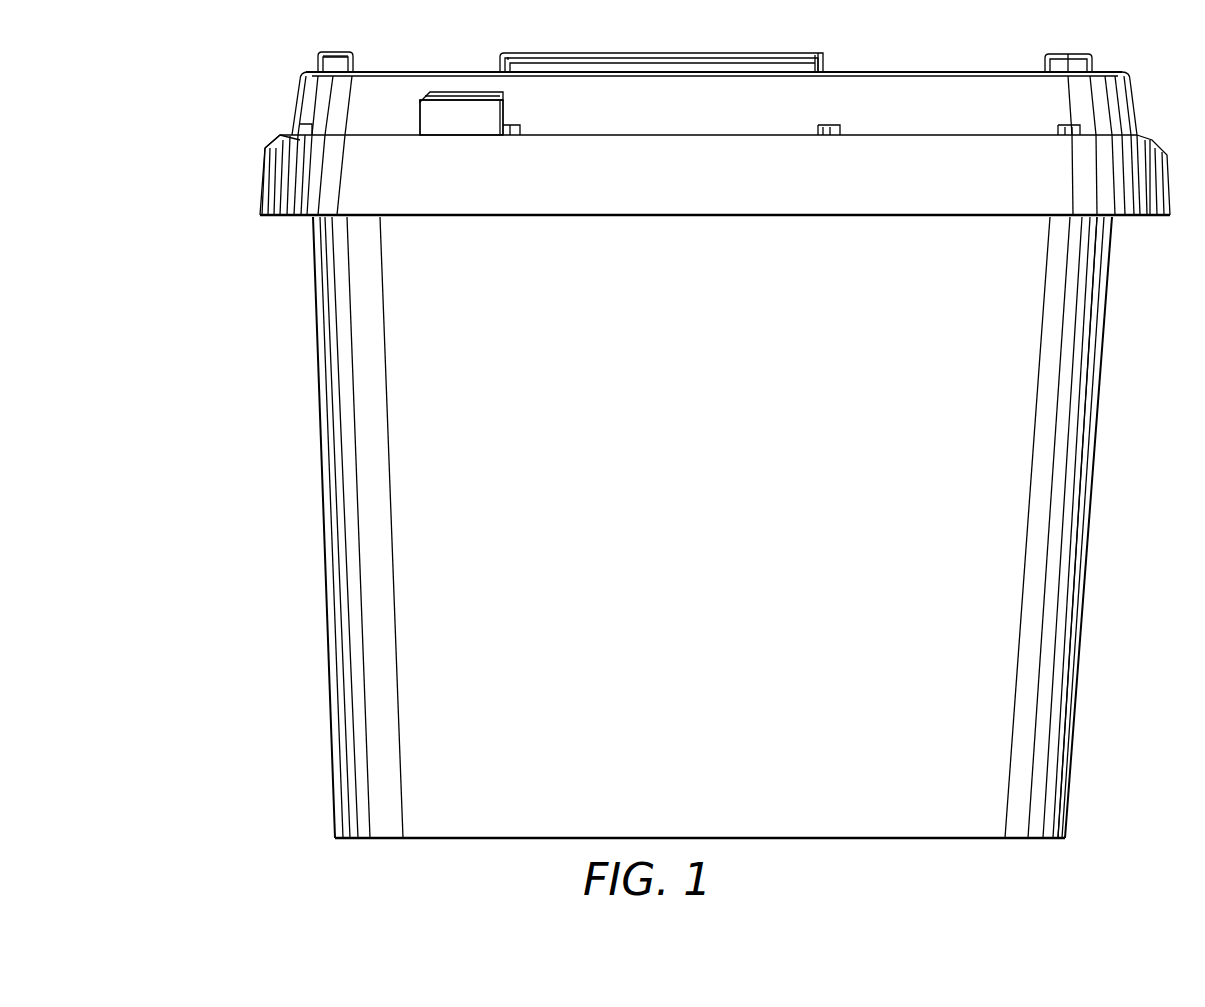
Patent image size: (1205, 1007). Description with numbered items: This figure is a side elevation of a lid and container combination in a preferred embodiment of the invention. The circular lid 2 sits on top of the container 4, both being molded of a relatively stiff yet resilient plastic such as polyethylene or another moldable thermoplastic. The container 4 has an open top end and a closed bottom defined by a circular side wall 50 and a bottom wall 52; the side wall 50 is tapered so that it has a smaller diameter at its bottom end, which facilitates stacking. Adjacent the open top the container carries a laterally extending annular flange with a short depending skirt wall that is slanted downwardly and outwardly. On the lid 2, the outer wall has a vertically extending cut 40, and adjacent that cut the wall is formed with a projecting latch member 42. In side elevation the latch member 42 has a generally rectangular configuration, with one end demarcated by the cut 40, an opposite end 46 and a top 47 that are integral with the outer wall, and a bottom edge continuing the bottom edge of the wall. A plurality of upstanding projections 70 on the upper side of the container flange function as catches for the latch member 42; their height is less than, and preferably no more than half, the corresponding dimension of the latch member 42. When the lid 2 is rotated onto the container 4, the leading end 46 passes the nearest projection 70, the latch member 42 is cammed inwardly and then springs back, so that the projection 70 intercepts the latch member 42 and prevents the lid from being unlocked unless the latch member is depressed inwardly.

The lid 2 is at (272, 99).
The container 4 is at (296, 285).
The cut 40 is at (504, 113).
The latch member 42 is at (467, 130).
The end 46 is at (419, 118).
The top 47 is at (456, 92).
The side wall 50 is at (1103, 358).
The bottom wall 52 is at (932, 842).
The projections 70 is at (532, 130).